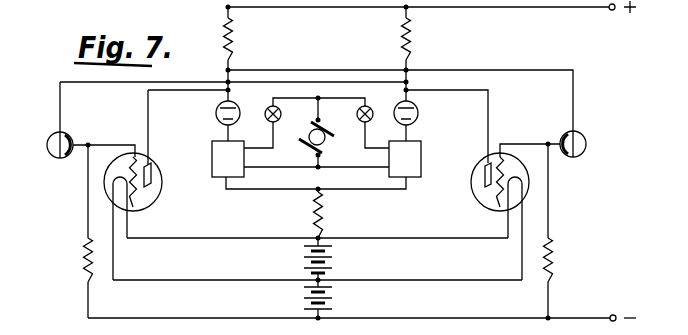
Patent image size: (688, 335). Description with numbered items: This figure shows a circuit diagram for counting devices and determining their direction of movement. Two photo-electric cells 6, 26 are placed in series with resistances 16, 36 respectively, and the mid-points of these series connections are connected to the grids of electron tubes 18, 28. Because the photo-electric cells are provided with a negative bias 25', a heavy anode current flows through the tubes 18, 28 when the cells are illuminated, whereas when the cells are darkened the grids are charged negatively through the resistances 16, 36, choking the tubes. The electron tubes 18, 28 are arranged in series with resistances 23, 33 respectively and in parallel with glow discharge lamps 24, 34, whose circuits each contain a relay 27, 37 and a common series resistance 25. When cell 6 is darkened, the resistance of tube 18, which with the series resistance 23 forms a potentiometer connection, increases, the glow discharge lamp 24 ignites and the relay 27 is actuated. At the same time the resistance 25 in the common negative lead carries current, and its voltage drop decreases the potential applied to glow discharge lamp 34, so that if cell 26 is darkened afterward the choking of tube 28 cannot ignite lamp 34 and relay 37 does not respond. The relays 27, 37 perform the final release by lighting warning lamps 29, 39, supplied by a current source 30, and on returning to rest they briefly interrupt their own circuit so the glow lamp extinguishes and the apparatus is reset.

The photo-electric cell 6 is at (46, 141).
The resistance 16 is at (69, 278).
The electron tube 18 is at (162, 183).
The resistance 23 is at (236, 40).
The glow discharge lamp 24 is at (214, 116).
The common series resistance 25 is at (338, 215).
The negative bias 25' is at (342, 283).
The photo-electric cell 26 is at (587, 144).
The relay 27 is at (228, 159).
The electron tube 28 is at (477, 194).
The warning lamp 29 is at (266, 110).
The current source 30 is at (326, 147).
The resistance 33 is at (422, 39).
The glow discharge lamp 34 is at (419, 115).
The resistance 36 is at (555, 258).
The relay 37 is at (405, 159).
The warning lamp 39 is at (380, 104).